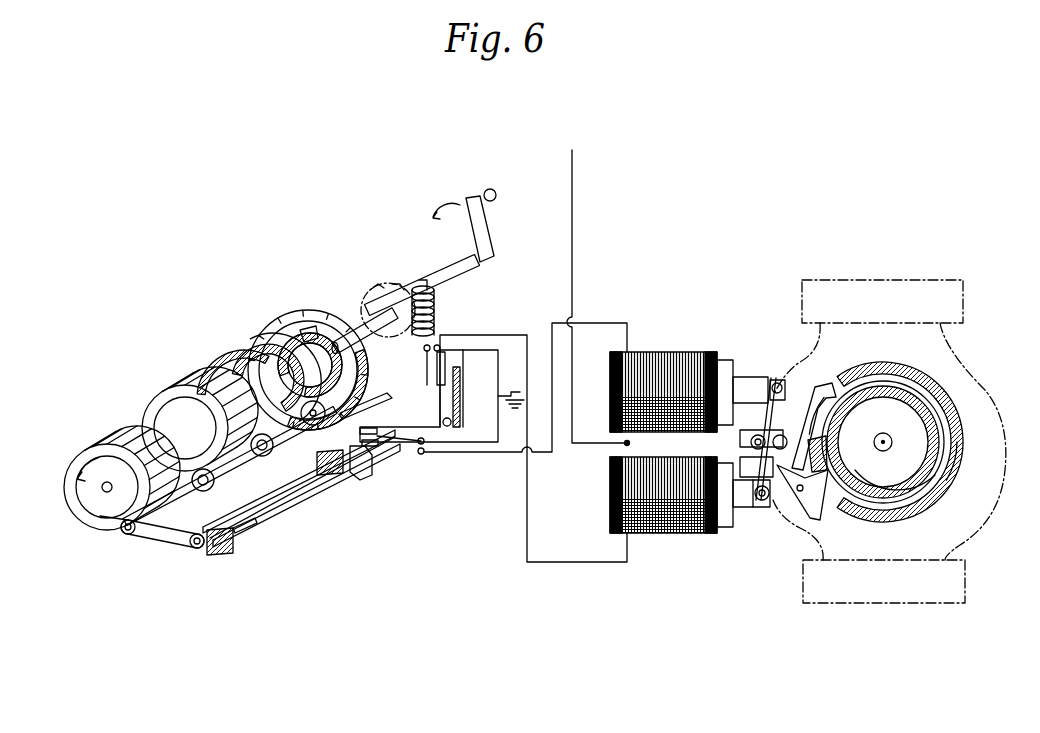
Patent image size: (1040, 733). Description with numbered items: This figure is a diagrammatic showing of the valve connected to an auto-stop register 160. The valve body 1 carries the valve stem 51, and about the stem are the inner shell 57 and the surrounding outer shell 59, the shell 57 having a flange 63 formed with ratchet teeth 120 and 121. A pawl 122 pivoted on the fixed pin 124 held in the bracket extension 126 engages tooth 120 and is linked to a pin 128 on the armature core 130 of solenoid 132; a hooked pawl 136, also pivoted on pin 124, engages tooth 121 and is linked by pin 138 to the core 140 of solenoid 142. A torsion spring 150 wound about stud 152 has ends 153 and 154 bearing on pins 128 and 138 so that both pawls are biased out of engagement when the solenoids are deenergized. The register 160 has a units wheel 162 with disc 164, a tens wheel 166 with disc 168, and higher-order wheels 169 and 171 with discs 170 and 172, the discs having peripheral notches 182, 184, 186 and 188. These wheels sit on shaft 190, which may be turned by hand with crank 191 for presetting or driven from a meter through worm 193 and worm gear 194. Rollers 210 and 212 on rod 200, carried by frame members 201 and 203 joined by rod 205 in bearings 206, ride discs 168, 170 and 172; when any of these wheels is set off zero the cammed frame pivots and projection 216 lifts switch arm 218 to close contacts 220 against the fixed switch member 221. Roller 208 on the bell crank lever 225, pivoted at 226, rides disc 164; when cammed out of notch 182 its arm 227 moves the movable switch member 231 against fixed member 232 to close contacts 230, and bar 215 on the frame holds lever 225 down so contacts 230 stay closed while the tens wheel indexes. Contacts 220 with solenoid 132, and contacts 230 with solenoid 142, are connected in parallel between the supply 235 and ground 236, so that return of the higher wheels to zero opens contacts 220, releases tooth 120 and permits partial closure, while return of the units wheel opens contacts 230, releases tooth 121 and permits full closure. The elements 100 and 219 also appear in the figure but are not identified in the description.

The valve body 1 is at (990, 482).
The valve stem 51 is at (892, 443).
The inner shell 57 is at (883, 364).
The outer shell 59 is at (915, 510).
The flange 63 is at (905, 370).
The brake drum 100 is at (848, 405).
The ratchet tooth 120 is at (825, 500).
The ratchet tooth 121 is at (883, 442).
The pawl 122 is at (804, 498).
The fixed pin 124 is at (797, 420).
The bracket extension 126 is at (754, 460).
The pin 128 is at (773, 380).
The armature core 130 is at (740, 375).
The solenoid 132 is at (650, 350).
The hooked pawl 136 is at (822, 440).
The pin 138 is at (766, 502).
The core 140 is at (742, 508).
The solenoid 142 is at (640, 535).
The torsion spring 150 is at (770, 420).
The stud 152 is at (750, 442).
The spring end 153 is at (770, 380).
The spring end 154 is at (752, 508).
The auto-stop register 160 is at (233, 340).
The units wheel 162 is at (335, 330).
The disc 164 is at (302, 343).
The tens wheel 166 is at (252, 345).
The disc 168 is at (215, 387).
The higher-order wheel 169 is at (150, 410).
The disc 170 is at (145, 425).
The higher-order wheel 171 is at (97, 447).
The disc 172 is at (72, 470).
The notch 182 is at (300, 330).
The notch 184 is at (255, 440).
The notch 186 is at (230, 466).
The notch 188 is at (120, 522).
The shaft 190 is at (368, 300).
The crank 191 is at (487, 215).
The worm 193 is at (437, 300).
The worm gear 194 is at (405, 282).
The rod 200 is at (150, 532).
The frame member 201 is at (190, 550).
The frame member 203 is at (310, 480).
The rod 205 is at (250, 530).
The bearings 206 is at (225, 557).
The roller 208 is at (355, 405).
The roller 210 is at (278, 490).
The roller 212 is at (180, 540).
The bar 215 is at (295, 485).
The projection 216 is at (365, 472).
The switch arm 218 is at (415, 452).
The pivot 219 is at (120, 530).
The contacts 220 is at (372, 447).
The fixed switch member 221 is at (424, 452).
The bell crank lever 225 is at (385, 412).
The pivot support 226 is at (451, 422).
The arm 227 is at (461, 385).
The contacts 230 is at (445, 362).
The movable switch member 231 is at (440, 350).
The fixed member 232 is at (427, 351).
The source of supply 235 is at (572, 190).
The ground 236 is at (508, 405).